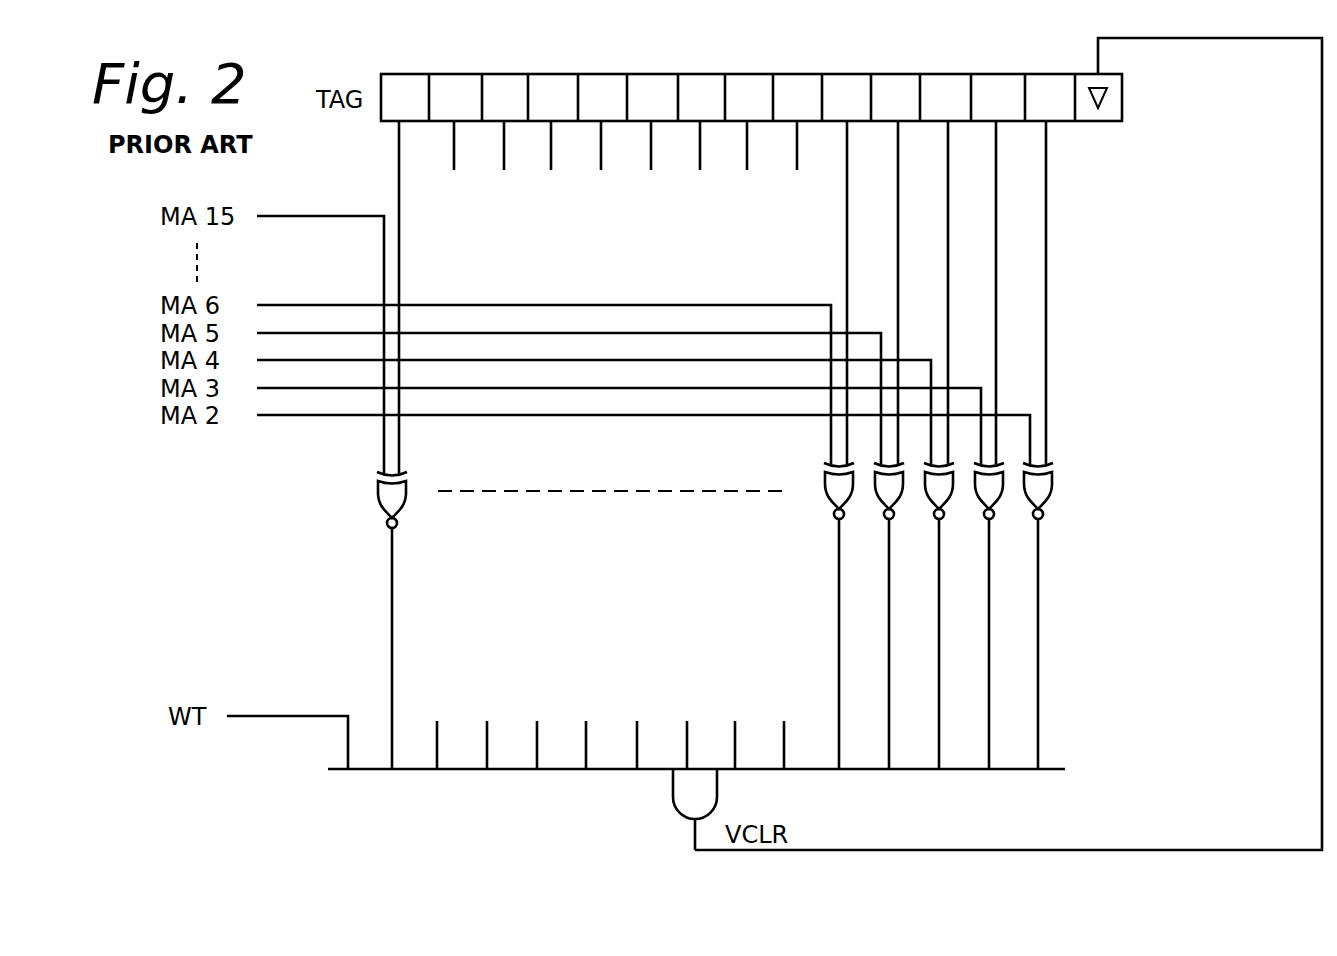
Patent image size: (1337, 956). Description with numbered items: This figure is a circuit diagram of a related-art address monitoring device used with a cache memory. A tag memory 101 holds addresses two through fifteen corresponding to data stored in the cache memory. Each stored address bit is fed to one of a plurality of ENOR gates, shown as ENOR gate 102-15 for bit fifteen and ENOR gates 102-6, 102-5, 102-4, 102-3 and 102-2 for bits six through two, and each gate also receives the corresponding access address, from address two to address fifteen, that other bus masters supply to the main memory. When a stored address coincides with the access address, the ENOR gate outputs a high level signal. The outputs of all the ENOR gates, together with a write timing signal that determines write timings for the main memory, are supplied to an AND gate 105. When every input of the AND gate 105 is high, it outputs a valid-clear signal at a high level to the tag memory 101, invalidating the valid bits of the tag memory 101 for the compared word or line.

The tag memory 101 is at (1124, 93).
The ENOR gate 102-15 is at (439, 620).
The ENOR gate 102-6 is at (791, 616).
The ENOR gate 102-5 is at (816, 616).
The ENOR gate 102-4 is at (841, 616).
The ENOR gate 102-3 is at (1055, 616).
The ENOR gate 102-2 is at (1083, 616).
The AND gate 105 is at (672, 800).